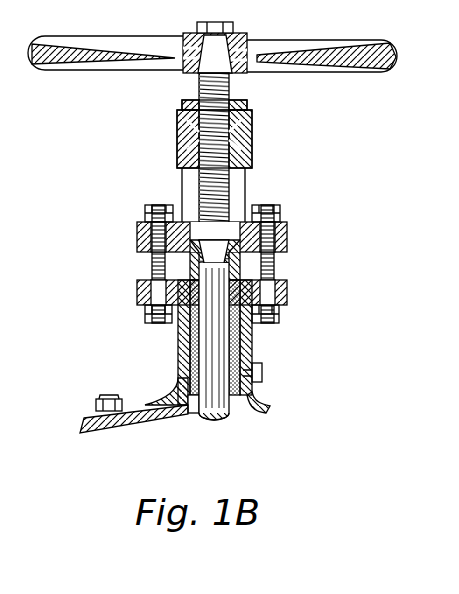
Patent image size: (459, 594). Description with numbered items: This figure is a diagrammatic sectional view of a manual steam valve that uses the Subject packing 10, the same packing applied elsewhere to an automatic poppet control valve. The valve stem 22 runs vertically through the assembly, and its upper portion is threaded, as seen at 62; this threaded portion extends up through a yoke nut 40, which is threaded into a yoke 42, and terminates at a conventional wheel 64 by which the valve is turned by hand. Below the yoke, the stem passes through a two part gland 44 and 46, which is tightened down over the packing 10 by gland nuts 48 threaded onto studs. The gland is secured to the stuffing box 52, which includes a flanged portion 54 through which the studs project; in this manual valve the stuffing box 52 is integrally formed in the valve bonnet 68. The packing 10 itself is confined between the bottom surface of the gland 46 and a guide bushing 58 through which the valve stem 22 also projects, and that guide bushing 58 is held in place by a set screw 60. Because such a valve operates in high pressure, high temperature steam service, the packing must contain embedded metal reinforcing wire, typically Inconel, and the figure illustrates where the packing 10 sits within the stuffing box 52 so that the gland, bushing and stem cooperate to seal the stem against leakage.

The packing 10 is at (184, 338).
The valve stem 22 is at (209, 419).
The yoke nut 40 is at (248, 97).
The yoke 42 is at (253, 128).
The gland (upper part of two part gland) 44 is at (289, 232).
The gland (lower part of two part gland) 46 is at (238, 267).
The gland nuts 48 is at (278, 208).
The stuffing box 52 is at (253, 333).
The flanged portion 54 is at (289, 291).
The guide bushing 58 is at (188, 378).
The set screw 60 is at (264, 372).
The threaded portion of valve stem 62 is at (233, 192).
The wheel 64 is at (308, 40).
The valve bonnet 68 is at (138, 418).